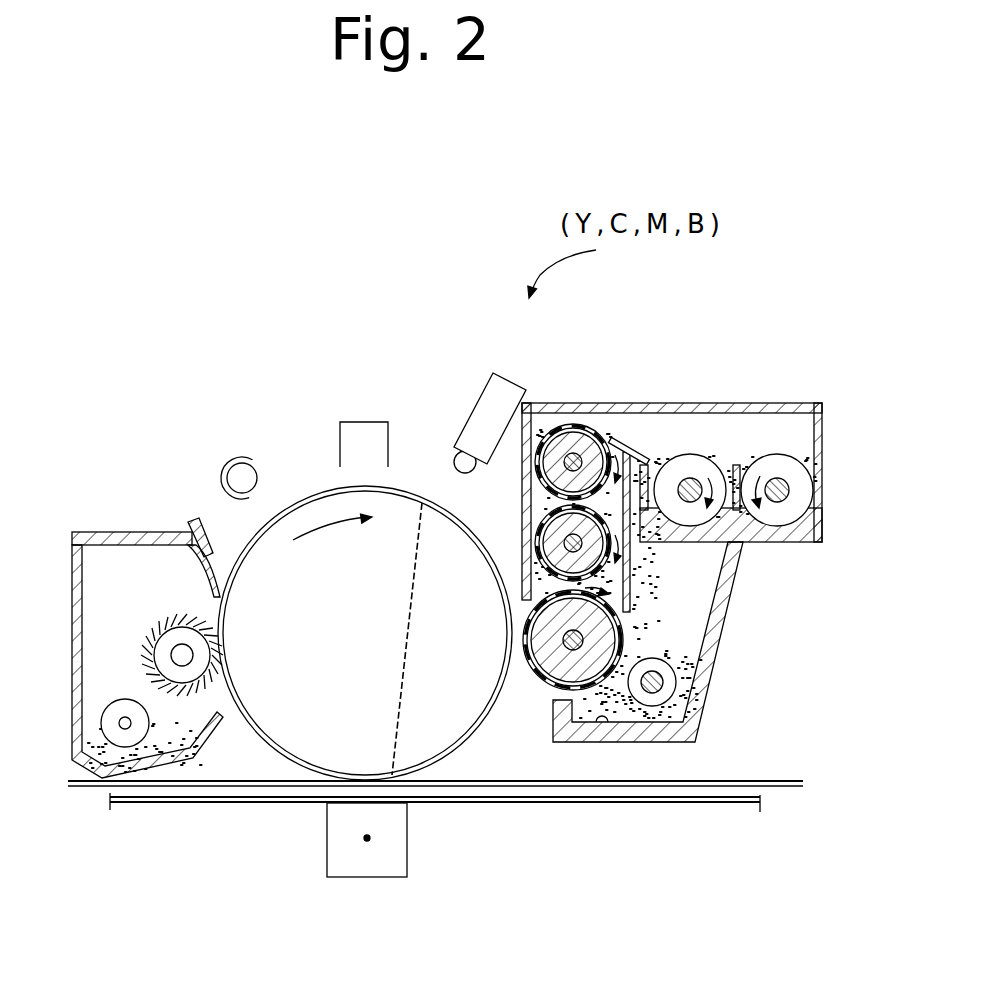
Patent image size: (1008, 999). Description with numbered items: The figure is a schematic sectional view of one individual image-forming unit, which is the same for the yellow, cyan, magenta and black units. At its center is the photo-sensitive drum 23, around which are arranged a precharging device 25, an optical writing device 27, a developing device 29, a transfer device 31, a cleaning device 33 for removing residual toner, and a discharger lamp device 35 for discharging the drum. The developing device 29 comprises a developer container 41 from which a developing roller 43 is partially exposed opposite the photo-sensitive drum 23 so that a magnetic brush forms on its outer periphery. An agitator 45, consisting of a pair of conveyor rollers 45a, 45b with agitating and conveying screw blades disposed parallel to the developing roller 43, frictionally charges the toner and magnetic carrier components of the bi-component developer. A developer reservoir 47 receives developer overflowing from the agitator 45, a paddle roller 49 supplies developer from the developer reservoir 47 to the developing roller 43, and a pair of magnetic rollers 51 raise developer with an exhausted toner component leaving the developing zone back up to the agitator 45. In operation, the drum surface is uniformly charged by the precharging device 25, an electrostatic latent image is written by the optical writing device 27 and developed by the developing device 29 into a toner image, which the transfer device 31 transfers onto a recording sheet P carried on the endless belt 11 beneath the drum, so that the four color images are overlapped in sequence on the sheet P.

The endless belt 11 is at (610, 802).
The photo-sensitive drum 23 is at (312, 488).
The precharging device 25 is at (358, 415).
The optical writing device 27 is at (478, 390).
The developing device 29 is at (665, 398).
The transfer device 31 is at (388, 886).
The cleaning device 33 is at (82, 522).
The discharger lamp device 35 is at (222, 455).
The developer container 41 is at (822, 441).
The developing roller 43 is at (543, 686).
The agitator 45 is at (736, 433).
The conveyor roller 45a is at (690, 468).
The conveyor roller 45b is at (780, 468).
The developer reservoir 47 is at (598, 728).
The paddle roller 49 is at (676, 682).
The magnetic rollers 51 is at (550, 520).
The recording sheet P is at (766, 782).